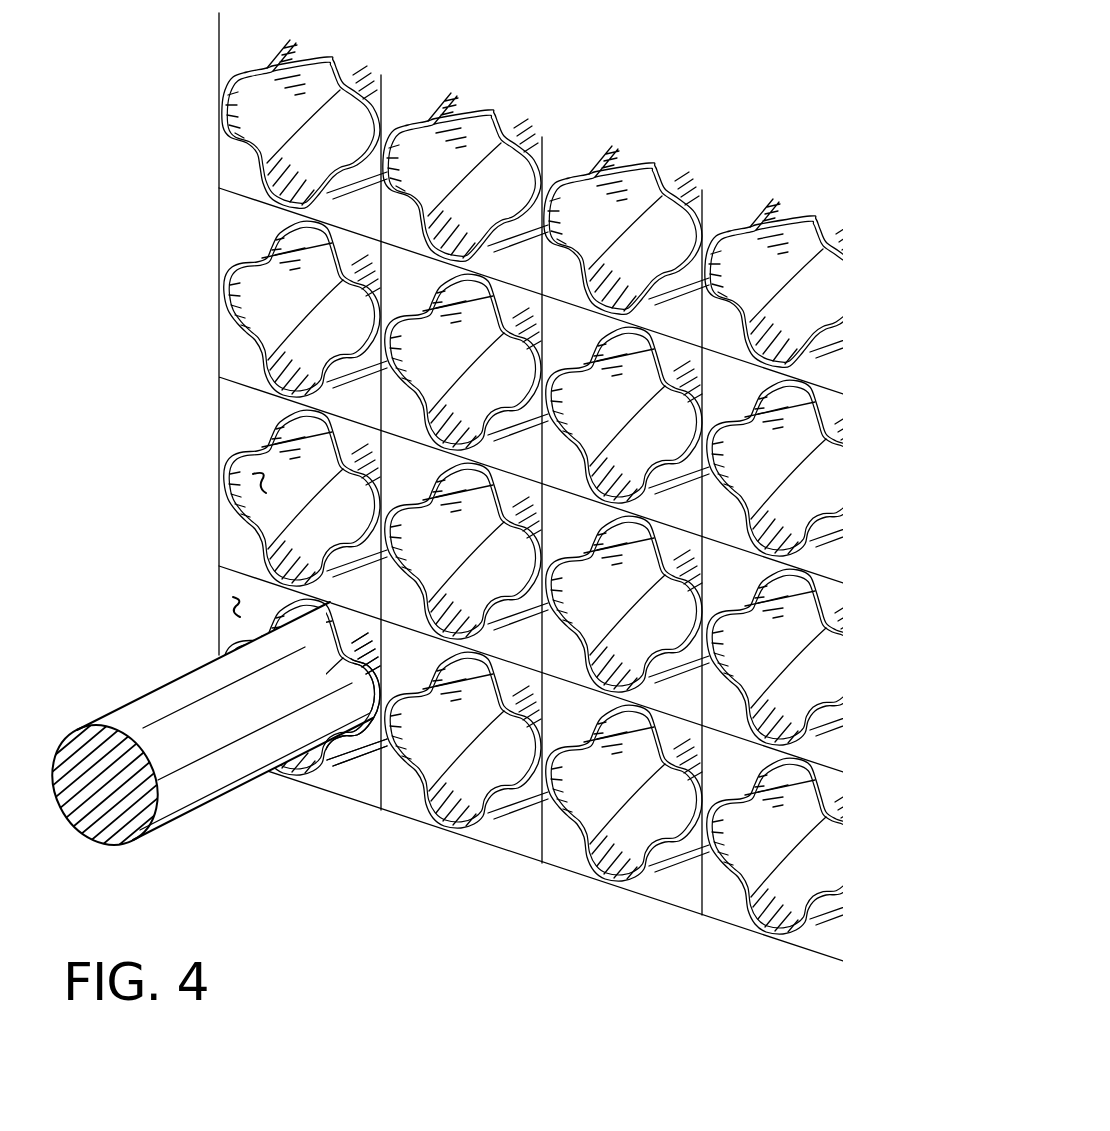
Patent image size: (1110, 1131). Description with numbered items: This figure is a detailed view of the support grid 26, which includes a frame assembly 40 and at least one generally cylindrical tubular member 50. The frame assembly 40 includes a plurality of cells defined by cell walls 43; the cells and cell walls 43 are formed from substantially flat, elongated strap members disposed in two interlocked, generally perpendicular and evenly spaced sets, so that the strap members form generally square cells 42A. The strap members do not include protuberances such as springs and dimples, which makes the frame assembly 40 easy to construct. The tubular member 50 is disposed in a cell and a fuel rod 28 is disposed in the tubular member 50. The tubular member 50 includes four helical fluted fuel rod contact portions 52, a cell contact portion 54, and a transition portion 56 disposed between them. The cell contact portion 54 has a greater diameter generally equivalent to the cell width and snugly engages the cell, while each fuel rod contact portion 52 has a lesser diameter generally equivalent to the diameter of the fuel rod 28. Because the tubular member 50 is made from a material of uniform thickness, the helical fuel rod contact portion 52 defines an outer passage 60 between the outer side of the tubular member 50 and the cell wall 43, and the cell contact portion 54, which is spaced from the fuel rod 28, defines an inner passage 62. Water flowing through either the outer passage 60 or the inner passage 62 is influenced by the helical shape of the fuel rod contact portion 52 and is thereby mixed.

The support grid 26 is at (565, 117).
The fuel rod 28 is at (212, 705).
The frame assembly 40 is at (196, 375).
The generally square cell 42A is at (230, 486).
The cell wall 43 is at (257, 387).
The tubular member 50 is at (227, 73).
The helical fluted portion or fuel rod contact portion 52 is at (273, 60).
The cell contact portion 54 is at (220, 105).
The transition portion 56 is at (255, 348).
The outer passage 60 is at (227, 608).
The inner passage 62 is at (360, 727).